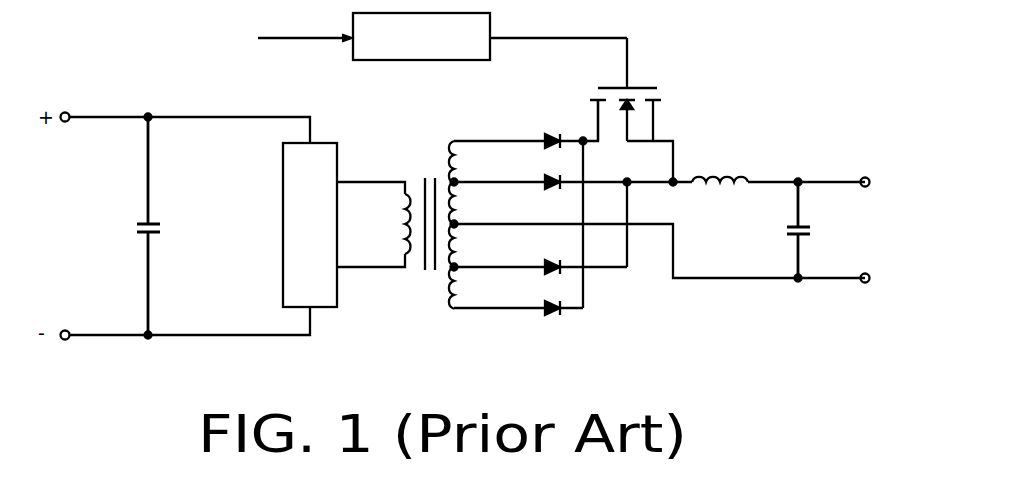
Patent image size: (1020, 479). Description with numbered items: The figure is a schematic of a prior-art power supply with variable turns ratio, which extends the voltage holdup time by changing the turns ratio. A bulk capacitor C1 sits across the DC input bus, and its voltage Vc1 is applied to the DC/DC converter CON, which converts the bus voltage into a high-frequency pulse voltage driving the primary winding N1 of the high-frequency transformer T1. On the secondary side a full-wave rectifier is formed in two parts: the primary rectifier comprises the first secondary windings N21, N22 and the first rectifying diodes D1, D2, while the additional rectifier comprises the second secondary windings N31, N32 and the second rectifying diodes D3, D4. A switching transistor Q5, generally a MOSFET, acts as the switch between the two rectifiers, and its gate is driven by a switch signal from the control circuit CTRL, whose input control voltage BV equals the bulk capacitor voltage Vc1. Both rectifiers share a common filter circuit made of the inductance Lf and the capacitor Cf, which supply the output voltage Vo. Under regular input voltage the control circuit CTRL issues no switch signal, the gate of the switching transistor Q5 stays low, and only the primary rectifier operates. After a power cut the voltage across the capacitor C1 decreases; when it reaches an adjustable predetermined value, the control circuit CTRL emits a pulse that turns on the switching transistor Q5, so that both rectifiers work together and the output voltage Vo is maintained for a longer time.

The capacitor C1 is at (133, 226).
The voltage of the bulk capacitor Vc1 is at (182, 227).
The DC/DC converter CON is at (310, 225).
The transformer T1 is at (420, 213).
The primary winding N1 is at (373, 224).
The second secondary winding N31 is at (504, 163).
The first secondary winding N21 is at (657, 230).
The first secondary winding N22 is at (497, 247).
The second secondary winding N32 is at (497, 288).
The second rectifying diode D3 is at (571, 124).
The first rectifying diode D1 is at (611, 172).
The first rectifying diode D2 is at (586, 257).
The second rectifying diode D4 is at (564, 299).
The switching transistor Q5 is at (631, 110).
The control circuit CTRL is at (490, 36).
The input control voltage BV is at (292, 38).
The inductance Lf is at (769, 166).
The capacitor Cf is at (786, 230).
The output voltage Vo is at (876, 229).